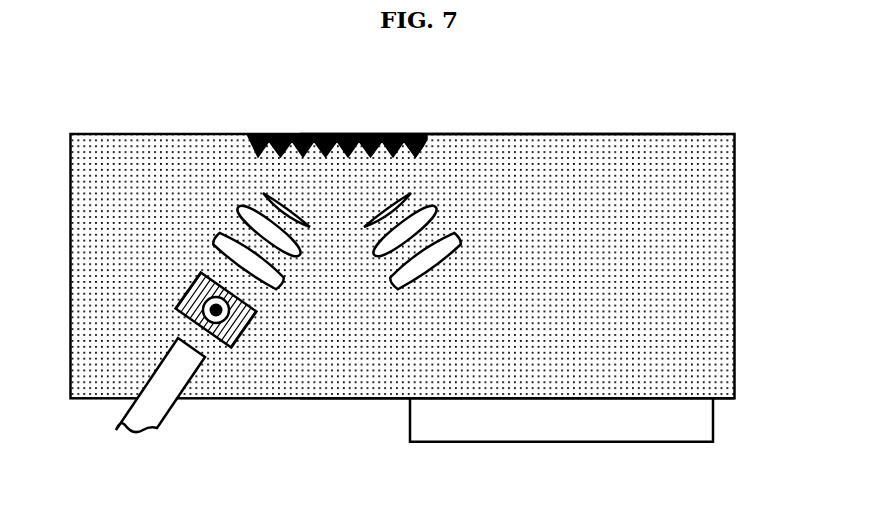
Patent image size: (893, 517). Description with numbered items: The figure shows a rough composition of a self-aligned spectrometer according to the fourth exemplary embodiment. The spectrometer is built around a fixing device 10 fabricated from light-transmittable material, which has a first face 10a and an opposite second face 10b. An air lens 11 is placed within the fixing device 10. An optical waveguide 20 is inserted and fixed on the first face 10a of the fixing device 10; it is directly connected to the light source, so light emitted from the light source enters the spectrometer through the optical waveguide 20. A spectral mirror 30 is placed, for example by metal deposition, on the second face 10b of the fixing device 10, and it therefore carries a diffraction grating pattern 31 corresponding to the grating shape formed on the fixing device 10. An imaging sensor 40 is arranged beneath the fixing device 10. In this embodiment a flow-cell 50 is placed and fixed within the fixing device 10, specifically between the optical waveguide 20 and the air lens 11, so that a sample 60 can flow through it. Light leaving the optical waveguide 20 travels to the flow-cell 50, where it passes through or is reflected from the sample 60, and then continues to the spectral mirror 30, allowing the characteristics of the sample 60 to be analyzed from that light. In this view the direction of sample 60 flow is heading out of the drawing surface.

The fixing device 10 is at (735, 261).
The first face 10a is at (725, 400).
The second face 10b is at (705, 134).
The air lens 11 is at (217, 243).
The optical waveguide 20 is at (157, 430).
The spectral mirror 30 is at (253, 134).
The diffraction grating pattern 31 is at (418, 150).
The imaging sensor 40 is at (541, 442).
The flow-cell 50 is at (176, 312).
The sample 60 is at (233, 347).